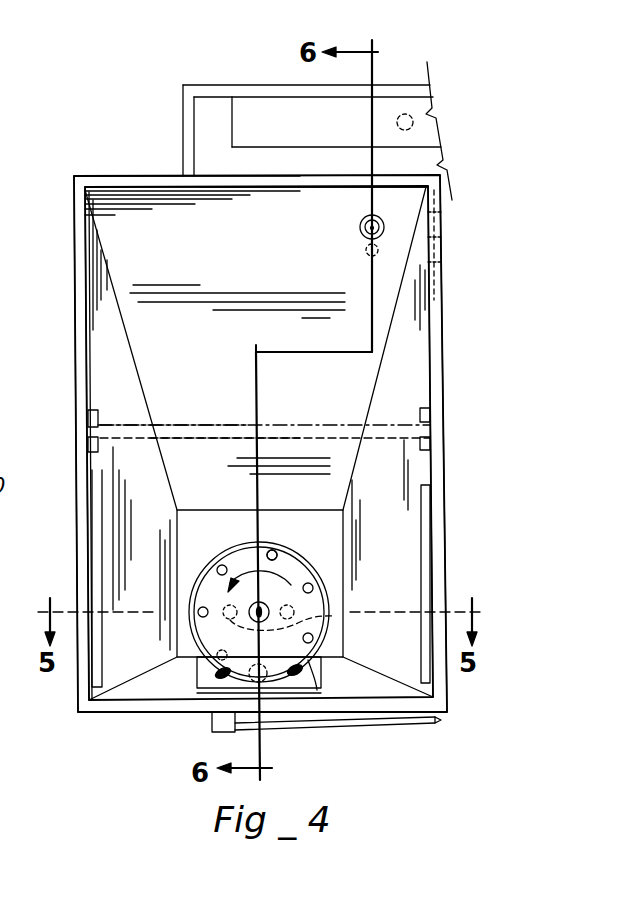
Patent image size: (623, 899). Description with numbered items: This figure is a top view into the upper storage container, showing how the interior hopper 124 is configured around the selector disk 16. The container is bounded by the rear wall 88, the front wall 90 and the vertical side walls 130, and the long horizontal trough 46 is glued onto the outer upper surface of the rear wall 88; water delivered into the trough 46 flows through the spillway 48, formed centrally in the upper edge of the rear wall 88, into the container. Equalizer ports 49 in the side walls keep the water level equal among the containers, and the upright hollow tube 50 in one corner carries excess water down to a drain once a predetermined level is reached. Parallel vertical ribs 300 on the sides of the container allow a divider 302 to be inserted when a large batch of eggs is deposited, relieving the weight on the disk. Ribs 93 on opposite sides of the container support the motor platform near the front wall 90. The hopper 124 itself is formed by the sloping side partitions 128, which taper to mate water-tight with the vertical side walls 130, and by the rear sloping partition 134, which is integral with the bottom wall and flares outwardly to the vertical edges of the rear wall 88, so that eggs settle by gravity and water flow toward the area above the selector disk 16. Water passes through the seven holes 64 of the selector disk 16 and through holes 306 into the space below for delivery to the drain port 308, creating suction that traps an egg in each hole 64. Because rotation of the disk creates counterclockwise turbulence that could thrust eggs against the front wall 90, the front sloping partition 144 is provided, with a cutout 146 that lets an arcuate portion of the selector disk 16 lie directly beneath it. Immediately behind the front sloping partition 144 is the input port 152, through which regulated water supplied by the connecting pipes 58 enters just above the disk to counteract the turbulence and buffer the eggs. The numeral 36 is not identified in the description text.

The selector disk 16 is at (240, 558).
The frame 36 is at (12, 46).
The trough 46 is at (283, 106).
The spillway 48 is at (333, 190).
The equalizer ports 49 is at (442, 300).
The upright hollow tube 50 is at (362, 237).
The connecting pipes 58 is at (370, 723).
The holes 64 is at (305, 572).
The rear wall 88 is at (109, 183).
The front wall 90 is at (172, 688).
The ribs 93 is at (100, 558).
The hopper 124 is at (188, 455).
The sloping side partitions 128 is at (100, 354).
The vertical side walls 130 is at (80, 303).
The rear sloping partition 134 is at (165, 198).
The front sloping partition 144 is at (143, 690).
The cutout 146 is at (313, 702).
The input port 152 is at (218, 705).
The vertical ribs 300 is at (102, 403).
The divider 302 is at (248, 422).
The holes 306 is at (330, 618).
The drain port 308 is at (371, 250).